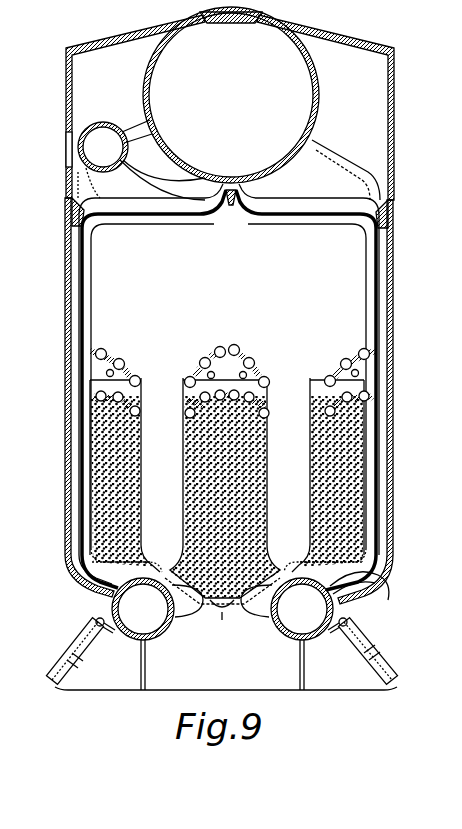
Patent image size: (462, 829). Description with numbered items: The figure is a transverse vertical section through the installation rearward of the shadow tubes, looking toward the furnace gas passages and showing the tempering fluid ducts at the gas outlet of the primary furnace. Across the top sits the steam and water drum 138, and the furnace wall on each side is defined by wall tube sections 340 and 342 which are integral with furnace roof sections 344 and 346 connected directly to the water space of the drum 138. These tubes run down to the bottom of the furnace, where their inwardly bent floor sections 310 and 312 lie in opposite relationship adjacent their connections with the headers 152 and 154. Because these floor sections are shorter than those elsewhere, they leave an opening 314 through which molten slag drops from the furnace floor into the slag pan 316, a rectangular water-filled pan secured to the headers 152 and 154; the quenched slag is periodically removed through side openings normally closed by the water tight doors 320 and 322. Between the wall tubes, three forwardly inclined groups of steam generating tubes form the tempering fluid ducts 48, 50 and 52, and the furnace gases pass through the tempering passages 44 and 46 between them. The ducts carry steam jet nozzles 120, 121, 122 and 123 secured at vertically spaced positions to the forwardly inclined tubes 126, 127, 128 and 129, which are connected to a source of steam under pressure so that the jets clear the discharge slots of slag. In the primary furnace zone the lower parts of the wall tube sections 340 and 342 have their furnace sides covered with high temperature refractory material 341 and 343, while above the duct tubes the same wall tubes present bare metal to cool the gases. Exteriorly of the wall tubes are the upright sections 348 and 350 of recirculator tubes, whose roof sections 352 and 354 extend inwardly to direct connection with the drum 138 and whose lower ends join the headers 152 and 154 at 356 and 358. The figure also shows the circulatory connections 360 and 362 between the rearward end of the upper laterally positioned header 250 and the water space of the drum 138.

The steam and water drum 138 is at (158, 60).
The upper laterally positioned header 250 is at (77, 145).
The circulatory connection 362 is at (130, 120).
The circulatory connection 360 is at (100, 180).
The roof section of recirculator tube 354 is at (127, 200).
The upright section of recirculator tube 350 is at (76, 257).
The furnace roof section 344 is at (172, 224).
The roof section of recirculator tube 352 is at (299, 198).
The furnace roof section 346 is at (332, 224).
The wall tube section 340 is at (369, 305).
The upright section of recirculator tube 348 is at (380, 258).
The wall tube section 342 is at (66, 290).
The recirculator tube lower end connection 356 is at (95, 580).
The recirculator tube lower end connection 358 is at (365, 585).
The high temperature refractory material 341 is at (100, 470).
The high temperature refractory material 343 is at (350, 478).
The tempering fluid duct 50 is at (236, 441).
The tempering passage 46 is at (171, 459).
The tempering passage 44 is at (301, 467).
The floor tube section 310 is at (160, 572).
The floor tube section 312 is at (284, 572).
The opening 314 is at (222, 620).
The slag pan 316 is at (236, 669).
The tempering fluid duct 52 is at (86, 367).
The tempering fluid duct 48 is at (371, 364).
The forwardly inclined tube 126 is at (112, 350).
The steam jet nozzle 123 is at (136, 376).
The steam jet nozzle 122 is at (197, 382).
The forwardly inclined tube 127 is at (218, 348).
The forwardly inclined tube 128 is at (238, 346).
The steam jet nozzle 121 is at (252, 366).
The forwardly inclined tube 129 is at (360, 350).
The steam jet nozzle 120 is at (328, 376).
The header 152 is at (113, 608).
The header 154 is at (333, 610).
The water tight door 320 is at (78, 666).
The water tight door 322 is at (372, 650).